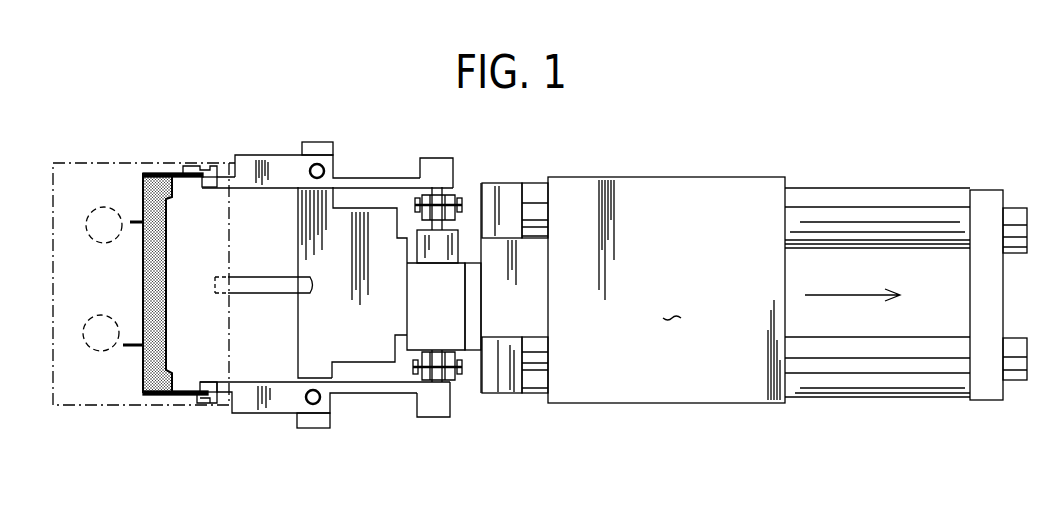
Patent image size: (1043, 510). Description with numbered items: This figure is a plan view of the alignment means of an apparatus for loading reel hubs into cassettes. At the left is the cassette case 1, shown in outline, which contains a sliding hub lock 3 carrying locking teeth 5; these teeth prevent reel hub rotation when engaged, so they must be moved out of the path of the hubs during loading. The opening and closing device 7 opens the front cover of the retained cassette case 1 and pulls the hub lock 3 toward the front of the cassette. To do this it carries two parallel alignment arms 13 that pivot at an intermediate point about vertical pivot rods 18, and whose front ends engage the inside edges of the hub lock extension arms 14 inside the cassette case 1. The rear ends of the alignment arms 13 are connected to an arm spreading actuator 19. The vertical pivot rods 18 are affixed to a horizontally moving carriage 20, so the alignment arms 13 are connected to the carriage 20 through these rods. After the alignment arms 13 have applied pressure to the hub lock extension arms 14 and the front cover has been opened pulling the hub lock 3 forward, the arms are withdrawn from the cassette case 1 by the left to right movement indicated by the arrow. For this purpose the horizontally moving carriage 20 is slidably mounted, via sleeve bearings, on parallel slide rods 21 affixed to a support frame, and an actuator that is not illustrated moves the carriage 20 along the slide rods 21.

The cassette case 1 is at (68, 407).
The sliding hub lock 3 is at (143, 285).
The locking teeth 5 is at (133, 226).
The opening and closing device 7 is at (257, 138).
The alignment arms 13 is at (447, 170).
The hub lock extension arms 14 is at (185, 170).
The vertical pivot rods 18 is at (320, 163).
The arm spreading actuator 19 is at (417, 285).
The horizontally moving carriage 20 is at (356, 327).
The slide rods 21 is at (887, 223).